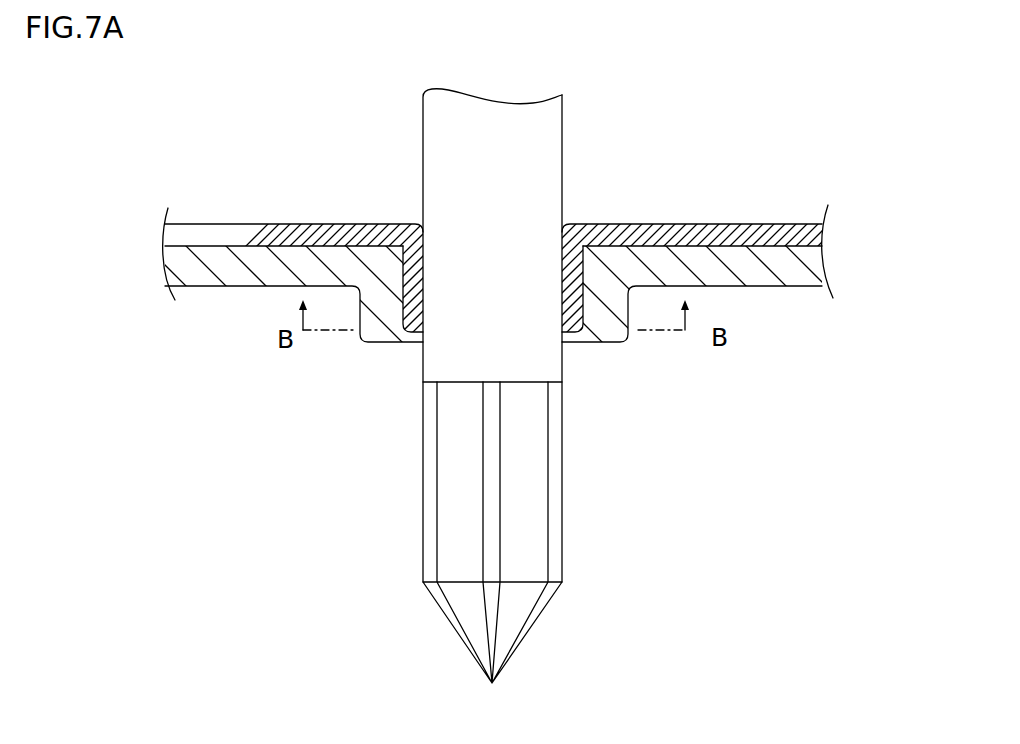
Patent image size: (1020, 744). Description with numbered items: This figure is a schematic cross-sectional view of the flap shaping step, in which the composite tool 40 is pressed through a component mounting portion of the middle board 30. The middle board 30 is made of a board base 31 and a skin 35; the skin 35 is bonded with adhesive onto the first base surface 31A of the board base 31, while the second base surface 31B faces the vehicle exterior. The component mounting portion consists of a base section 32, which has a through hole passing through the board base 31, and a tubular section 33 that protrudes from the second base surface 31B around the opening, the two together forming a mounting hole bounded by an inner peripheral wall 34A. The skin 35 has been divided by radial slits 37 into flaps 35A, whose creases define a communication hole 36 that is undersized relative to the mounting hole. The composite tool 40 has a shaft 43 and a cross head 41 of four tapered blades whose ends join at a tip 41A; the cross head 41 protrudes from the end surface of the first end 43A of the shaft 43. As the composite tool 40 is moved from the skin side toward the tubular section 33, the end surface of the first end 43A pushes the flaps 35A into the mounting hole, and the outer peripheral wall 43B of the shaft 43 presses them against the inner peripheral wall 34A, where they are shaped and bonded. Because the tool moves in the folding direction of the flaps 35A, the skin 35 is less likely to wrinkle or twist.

The middle board 30 is at (536, 298).
The board base 31 is at (797, 265).
The first base surface 31A is at (238, 242).
The second base surface 31B is at (240, 288).
The base section 32 is at (383, 265).
The tubular section 33 is at (370, 332).
The inner peripheral wall 34A is at (583, 331).
The skin 35 is at (793, 224).
The flaps 35A is at (424, 298).
The communication hole 36 is at (568, 246).
The slits 37 is at (565, 340).
The composite tool 40 is at (503, 405).
The cross head 41 is at (492, 600).
The tip 41A is at (494, 686).
The shaft 43 is at (462, 162).
The first end 43A is at (467, 385).
The outer peripheral wall 43B is at (562, 178).